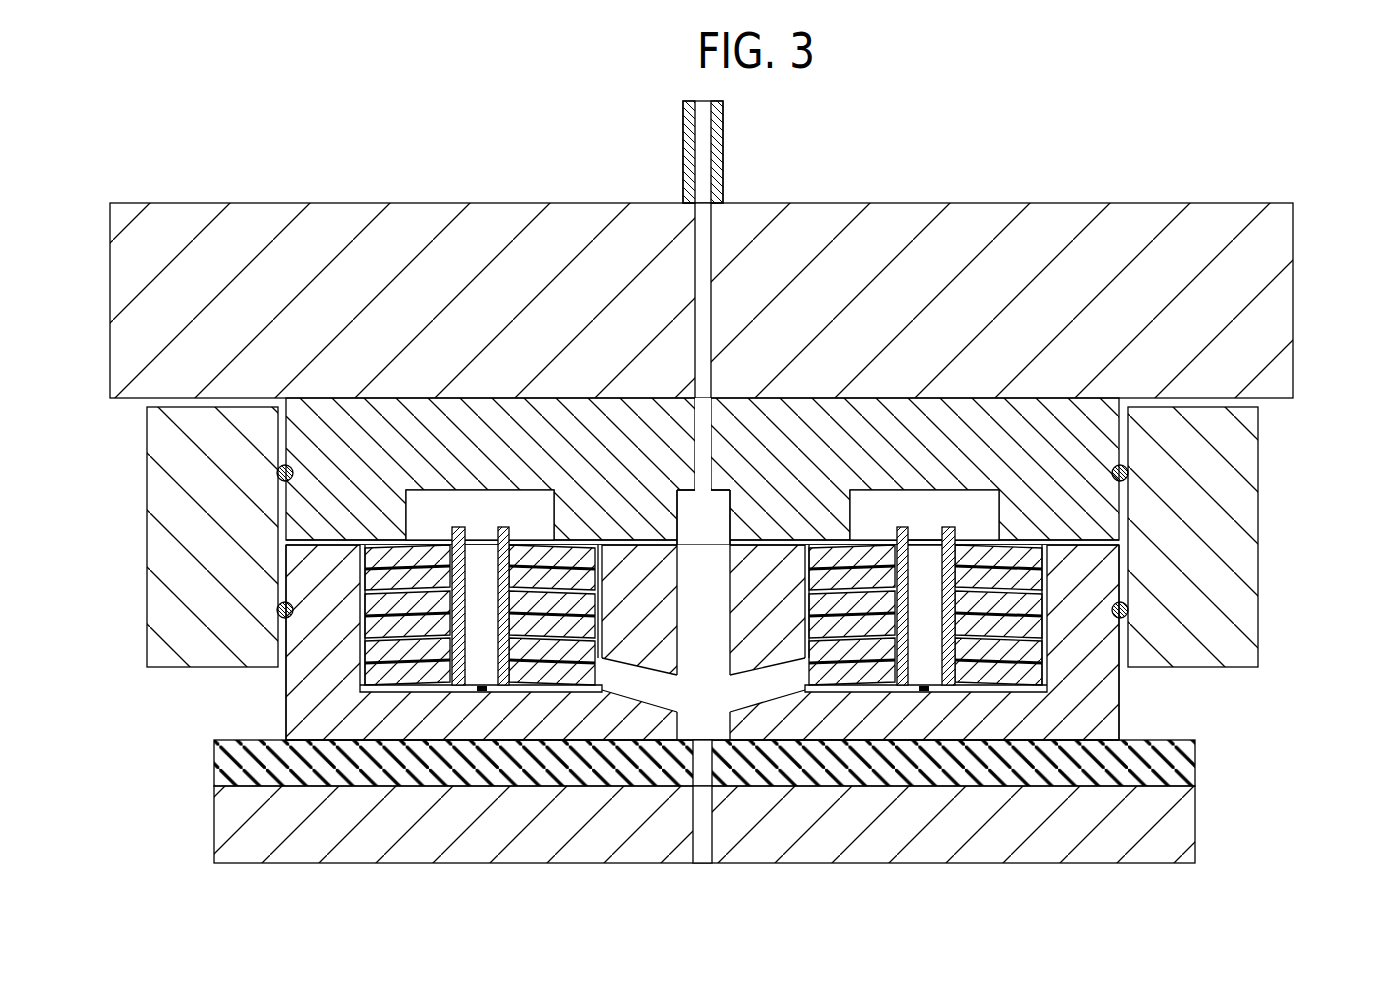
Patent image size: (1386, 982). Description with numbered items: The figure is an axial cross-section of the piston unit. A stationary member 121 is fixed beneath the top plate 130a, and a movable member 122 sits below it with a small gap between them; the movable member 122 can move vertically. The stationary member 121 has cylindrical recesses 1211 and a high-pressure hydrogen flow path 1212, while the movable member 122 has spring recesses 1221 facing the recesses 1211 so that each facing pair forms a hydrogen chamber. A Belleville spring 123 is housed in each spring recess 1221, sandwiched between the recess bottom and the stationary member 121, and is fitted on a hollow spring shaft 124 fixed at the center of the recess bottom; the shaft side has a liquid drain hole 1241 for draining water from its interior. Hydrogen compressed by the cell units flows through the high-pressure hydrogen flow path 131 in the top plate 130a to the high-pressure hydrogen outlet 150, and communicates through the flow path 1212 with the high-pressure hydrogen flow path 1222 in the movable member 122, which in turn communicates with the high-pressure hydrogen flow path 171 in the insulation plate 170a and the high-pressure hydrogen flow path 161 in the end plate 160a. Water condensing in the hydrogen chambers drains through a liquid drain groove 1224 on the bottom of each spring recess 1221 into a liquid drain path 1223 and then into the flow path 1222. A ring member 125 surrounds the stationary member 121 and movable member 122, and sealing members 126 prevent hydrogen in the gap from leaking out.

The top plate 130a is at (1100, 222).
The high-pressure hydrogen outlet 150 is at (724, 123).
The high-pressure hydrogen flow path 131 is at (709, 248).
The stationary member 121 is at (1110, 438).
The recess 1211 is at (433, 508).
The high-pressure hydrogen flow path 1212 is at (712, 403).
The spring shaft 124 is at (955, 522).
The ring member 125 is at (1242, 633).
The sealing member 126 is at (1128, 477).
The movable member 122 is at (1112, 718).
The spring recess 1221 is at (925, 673).
The high-pressure hydrogen flow path 1222 is at (720, 723).
The liquid drain path 1223 is at (621, 678).
The liquid drain groove 1224 is at (1015, 691).
The Belleville spring 123 is at (1044, 665).
The liquid drain hole 1241 is at (901, 682).
The insulation plate 170a is at (1196, 768).
The end plate 160a is at (1196, 833).
The high-pressure hydrogen flow path 171 is at (705, 776).
The high-pressure hydrogen flow path 161 is at (704, 846).